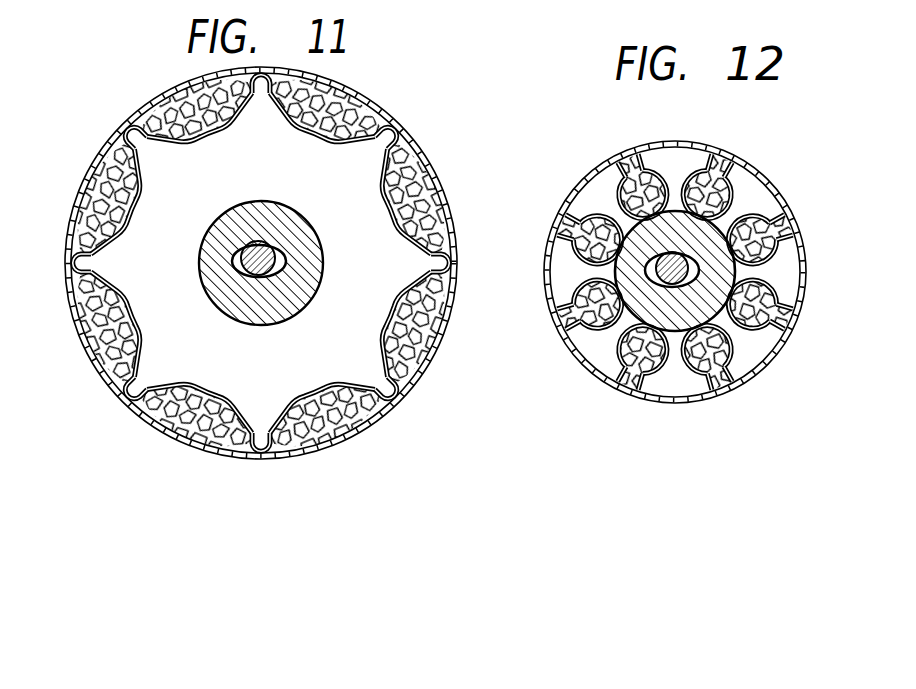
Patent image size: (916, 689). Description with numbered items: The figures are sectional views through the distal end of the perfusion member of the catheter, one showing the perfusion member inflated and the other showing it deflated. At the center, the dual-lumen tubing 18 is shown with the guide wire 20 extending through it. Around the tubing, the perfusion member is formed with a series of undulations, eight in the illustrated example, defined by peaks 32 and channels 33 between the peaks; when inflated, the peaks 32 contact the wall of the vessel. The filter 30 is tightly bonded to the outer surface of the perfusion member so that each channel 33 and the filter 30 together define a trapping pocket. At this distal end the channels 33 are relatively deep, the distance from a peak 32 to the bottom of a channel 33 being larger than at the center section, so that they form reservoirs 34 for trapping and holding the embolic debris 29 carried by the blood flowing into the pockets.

In FIG. 11, the dual-lumen tubing 18 is at (322, 275).
In FIG. 12, the dual-lumen tubing 18 is at (675, 271).
In FIG. 11, the guide wire 20 is at (259, 265).
In FIG. 12, the guide wire 20 is at (678, 271).
In FIG. 11, the embolic debris 29 is at (362, 97).
In FIG. 12, the embolic debris 29 is at (596, 326).
In FIG. 11, the filter 30 is at (345, 446).
In FIG. 12, the filter 30 is at (681, 143).
In FIG. 11, the peaks 32 is at (262, 100).
In FIG. 12, the peaks 32 is at (669, 404).
In FIG. 11, the channels 33 is at (108, 380).
In FIG. 12, the channels 33 is at (742, 198).
In FIG. 11, the reservoirs 34 is at (328, 148).
In FIG. 12, the reservoirs 34 is at (583, 283).